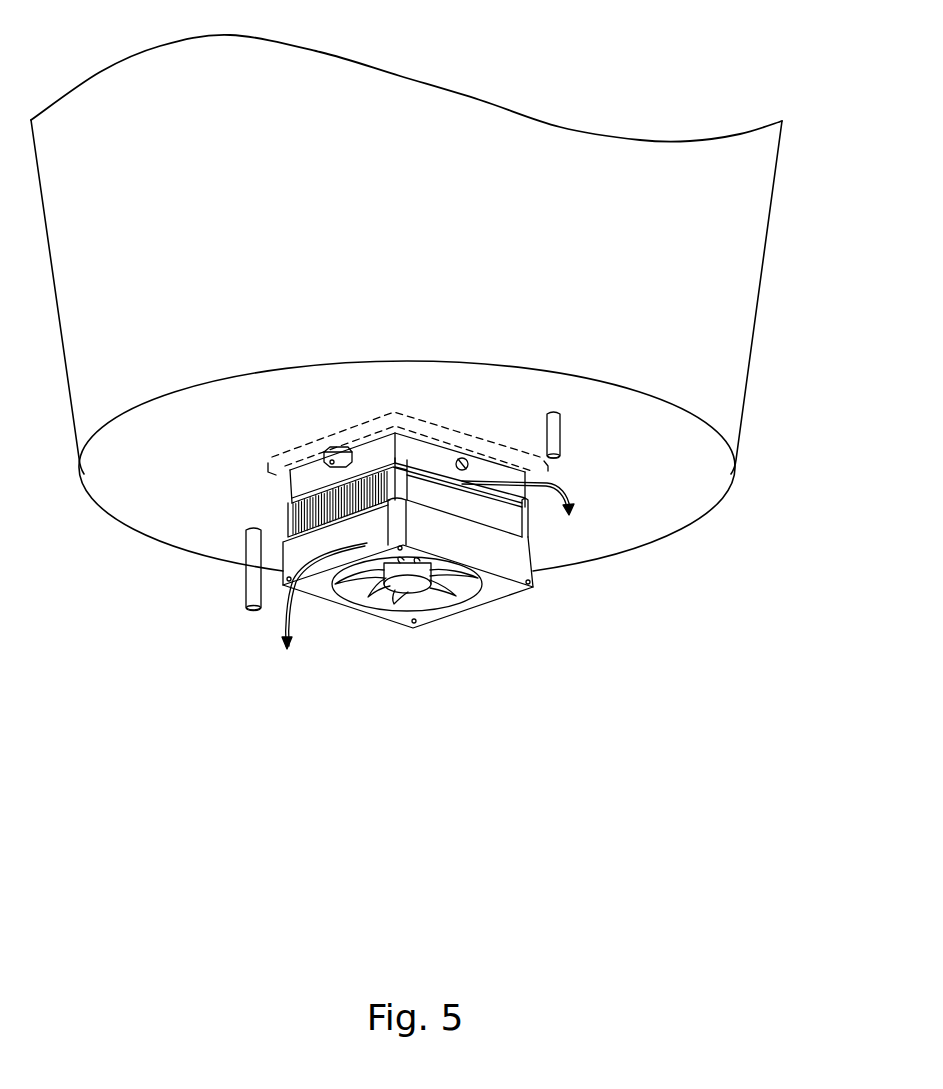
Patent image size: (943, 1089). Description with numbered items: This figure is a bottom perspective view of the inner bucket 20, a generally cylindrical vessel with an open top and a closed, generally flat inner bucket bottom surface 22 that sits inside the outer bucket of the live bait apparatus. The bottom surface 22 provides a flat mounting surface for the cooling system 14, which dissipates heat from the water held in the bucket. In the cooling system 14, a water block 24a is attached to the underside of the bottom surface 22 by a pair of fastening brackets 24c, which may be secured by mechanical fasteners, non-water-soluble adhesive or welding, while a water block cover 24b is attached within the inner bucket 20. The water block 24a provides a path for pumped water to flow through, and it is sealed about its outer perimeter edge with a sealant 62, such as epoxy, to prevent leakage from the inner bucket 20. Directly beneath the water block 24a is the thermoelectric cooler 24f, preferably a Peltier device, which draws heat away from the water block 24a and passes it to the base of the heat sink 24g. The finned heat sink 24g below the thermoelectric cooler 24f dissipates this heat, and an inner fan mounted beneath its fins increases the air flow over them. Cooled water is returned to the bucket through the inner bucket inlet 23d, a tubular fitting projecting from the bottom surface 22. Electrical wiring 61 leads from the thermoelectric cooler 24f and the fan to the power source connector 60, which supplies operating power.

The inner bucket 20 is at (113, 95).
The inner bucket bottom surface 22 is at (217, 410).
The cooling system 14 is at (196, 456).
The inner bucket inlet 23d is at (558, 430).
The water block 24a is at (375, 450).
The water block cover 24b is at (419, 417).
The fastening brackets 24c is at (342, 455).
The thermoelectric cooler 24f is at (305, 493).
The heat sink 24g is at (500, 518).
The sealant 62 is at (453, 450).
The electrical wiring 61 is at (279, 617).
The power source connector 60 is at (443, 604).